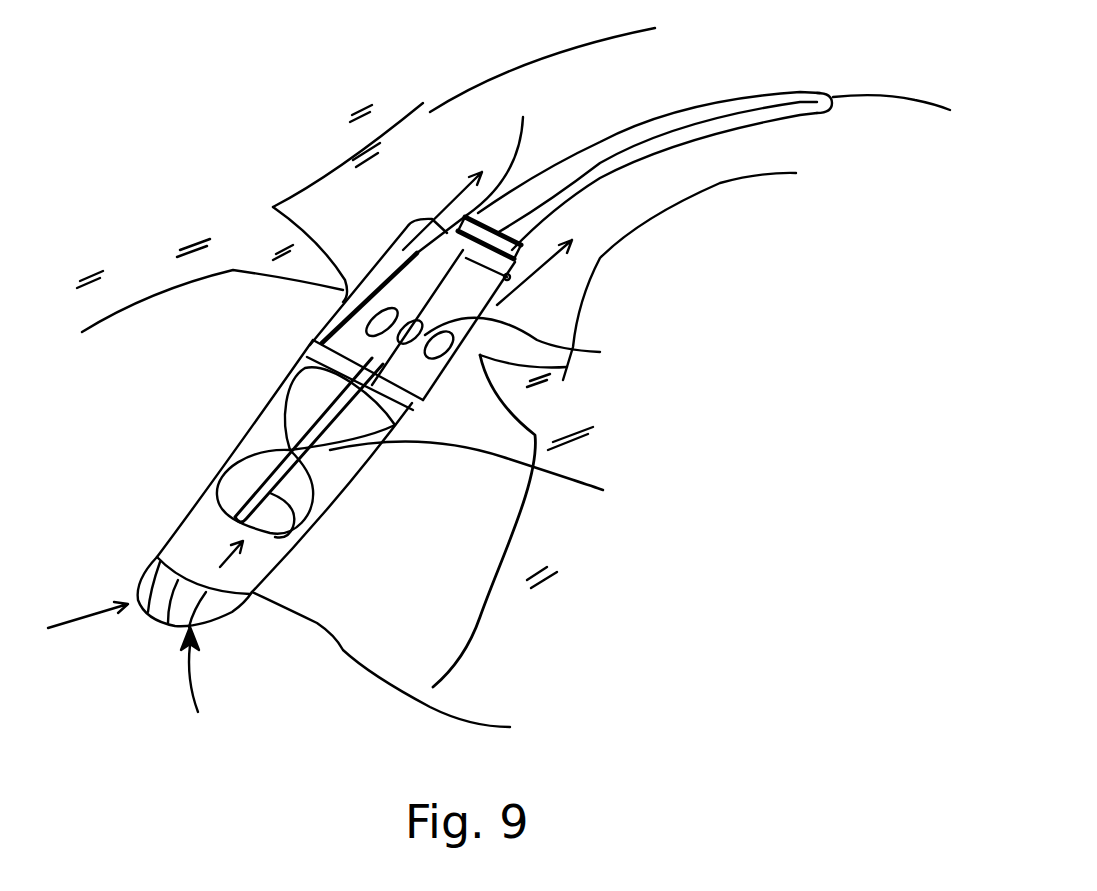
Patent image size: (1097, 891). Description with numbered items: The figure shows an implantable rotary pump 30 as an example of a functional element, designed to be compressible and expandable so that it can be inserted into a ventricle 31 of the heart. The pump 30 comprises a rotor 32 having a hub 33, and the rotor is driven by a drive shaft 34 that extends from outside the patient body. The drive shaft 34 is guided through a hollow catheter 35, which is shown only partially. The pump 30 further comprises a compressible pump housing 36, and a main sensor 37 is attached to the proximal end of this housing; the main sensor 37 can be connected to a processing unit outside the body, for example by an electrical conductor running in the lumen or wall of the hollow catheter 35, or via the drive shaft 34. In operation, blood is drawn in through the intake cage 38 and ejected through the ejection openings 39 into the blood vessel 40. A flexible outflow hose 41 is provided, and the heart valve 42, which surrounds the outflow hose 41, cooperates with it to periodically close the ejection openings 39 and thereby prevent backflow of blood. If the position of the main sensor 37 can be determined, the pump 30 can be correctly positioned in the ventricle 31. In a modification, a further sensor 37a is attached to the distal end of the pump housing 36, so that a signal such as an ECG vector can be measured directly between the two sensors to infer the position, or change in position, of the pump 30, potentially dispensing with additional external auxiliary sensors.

The rotary pump 30 is at (201, 442).
The ventricle 31 is at (460, 620).
The rotor 32 is at (333, 481).
The hub 33 is at (297, 537).
The drive shaft 34 is at (873, 96).
The hollow catheter 35 is at (813, 113).
The compressible pump housing 36 is at (496, 490).
The main sensor 37 is at (528, 147).
The further sensor 37a is at (419, 667).
The intake cage 38 is at (223, 613).
The ejection openings 39 is at (600, 352).
The blood vessel 40 is at (663, 212).
The flexible outflow hose 41 is at (385, 253).
The heart valve 42 is at (295, 278).